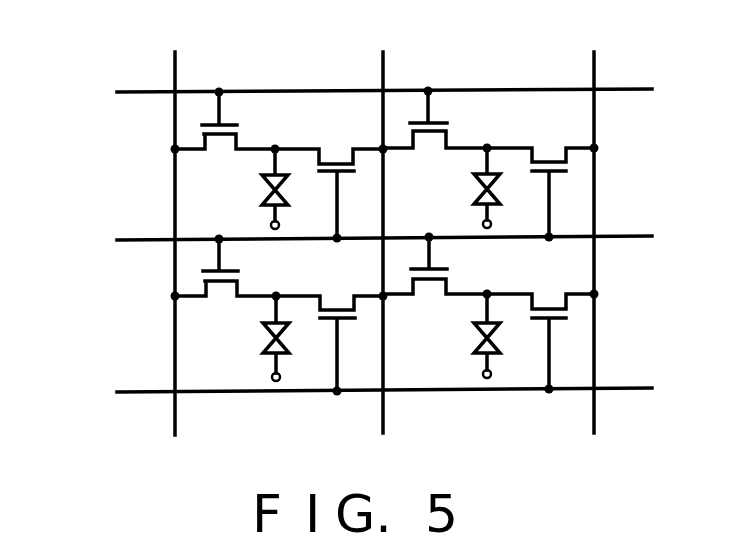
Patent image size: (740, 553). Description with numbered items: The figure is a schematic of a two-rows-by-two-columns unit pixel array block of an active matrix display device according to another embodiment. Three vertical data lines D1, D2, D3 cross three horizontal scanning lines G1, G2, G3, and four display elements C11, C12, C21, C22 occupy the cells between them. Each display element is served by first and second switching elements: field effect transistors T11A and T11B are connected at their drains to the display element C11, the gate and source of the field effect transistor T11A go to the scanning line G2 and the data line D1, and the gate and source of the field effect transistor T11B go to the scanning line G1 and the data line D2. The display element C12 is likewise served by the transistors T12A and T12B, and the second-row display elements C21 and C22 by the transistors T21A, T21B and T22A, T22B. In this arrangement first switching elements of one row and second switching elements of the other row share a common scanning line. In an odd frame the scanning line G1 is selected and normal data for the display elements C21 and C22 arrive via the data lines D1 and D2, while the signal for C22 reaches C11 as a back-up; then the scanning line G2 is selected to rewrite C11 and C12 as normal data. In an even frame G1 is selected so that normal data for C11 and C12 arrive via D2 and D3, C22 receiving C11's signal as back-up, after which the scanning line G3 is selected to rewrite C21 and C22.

The data line D1 is at (175, 226).
The data line D2 is at (381, 225).
The data line D3 is at (593, 225).
The scanning line G1 is at (358, 236).
The scanning line G2 is at (358, 92).
The scanning line G3 is at (358, 391).
The field effect transistor T11A is at (223, 136).
The field effect transistor T11B is at (331, 177).
The field effect transistor T12A is at (435, 136).
The field effect transistor T12B is at (543, 177).
The field effect transistor T21A is at (224, 282).
The field effect transistor T21B is at (332, 327).
The field effect transistor T22A is at (435, 281).
The field effect transistor T22B is at (543, 325).
The display element C11 is at (254, 187).
The display element C12 is at (465, 186).
The display element C21 is at (250, 337).
The display element C22 is at (458, 334).